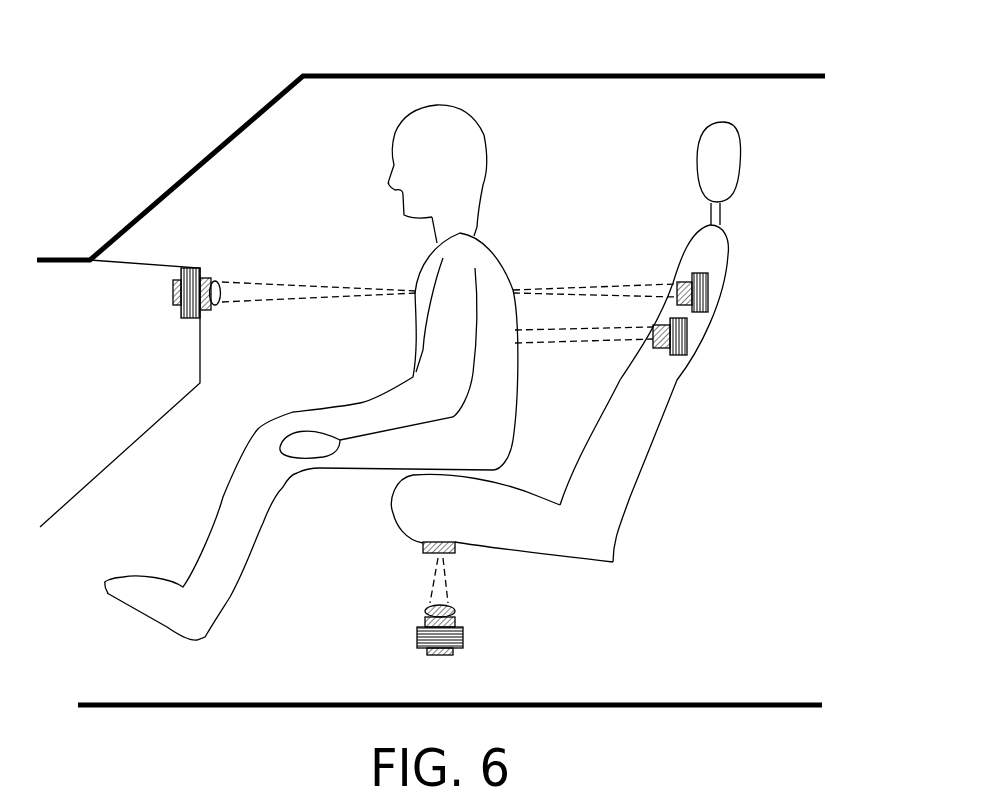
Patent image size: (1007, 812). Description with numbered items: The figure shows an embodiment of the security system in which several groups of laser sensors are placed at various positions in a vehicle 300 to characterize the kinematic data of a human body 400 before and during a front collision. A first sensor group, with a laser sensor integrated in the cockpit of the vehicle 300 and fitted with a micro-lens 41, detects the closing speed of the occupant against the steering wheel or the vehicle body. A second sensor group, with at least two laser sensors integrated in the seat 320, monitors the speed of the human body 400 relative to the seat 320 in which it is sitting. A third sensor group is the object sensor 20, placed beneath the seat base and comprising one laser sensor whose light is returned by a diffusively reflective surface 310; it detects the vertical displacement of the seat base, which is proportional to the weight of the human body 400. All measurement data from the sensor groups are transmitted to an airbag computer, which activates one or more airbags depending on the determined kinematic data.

The vehicle 300 is at (700, 72).
The micro-lens 41 is at (213, 285).
The human body 400 is at (493, 252).
The seat 320 is at (630, 467).
The diffusively reflective surface 310 is at (447, 553).
The object sensor 20 is at (417, 635).